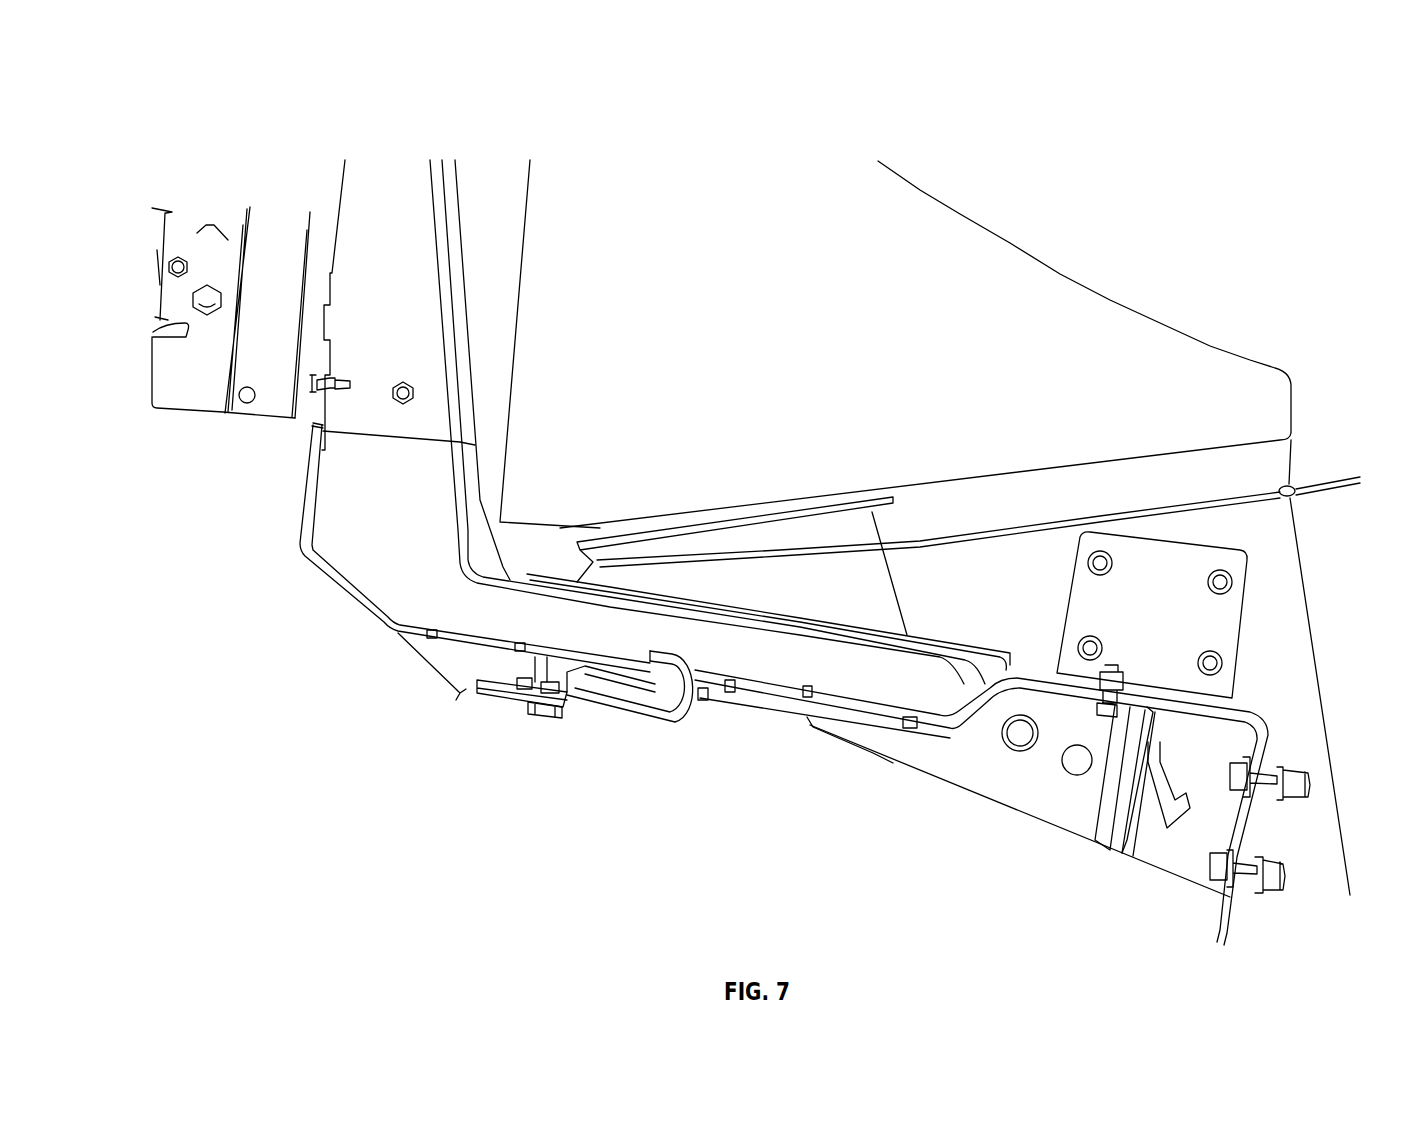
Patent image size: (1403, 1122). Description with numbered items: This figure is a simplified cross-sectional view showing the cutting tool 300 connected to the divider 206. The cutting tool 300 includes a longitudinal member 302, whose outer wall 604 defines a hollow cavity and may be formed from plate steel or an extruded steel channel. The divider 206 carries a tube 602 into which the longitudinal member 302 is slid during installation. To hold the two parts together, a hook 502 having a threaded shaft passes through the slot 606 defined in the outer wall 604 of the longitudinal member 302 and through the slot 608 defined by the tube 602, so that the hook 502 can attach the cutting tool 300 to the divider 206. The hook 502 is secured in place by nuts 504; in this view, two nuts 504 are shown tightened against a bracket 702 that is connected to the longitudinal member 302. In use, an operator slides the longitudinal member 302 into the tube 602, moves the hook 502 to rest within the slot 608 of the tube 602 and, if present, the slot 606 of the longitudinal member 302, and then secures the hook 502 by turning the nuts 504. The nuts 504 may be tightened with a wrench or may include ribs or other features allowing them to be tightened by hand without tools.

The cutting tool 300 is at (887, 145).
The divider 206 is at (1262, 435).
The longitudinal member 302 is at (480, 622).
The hook 502 is at (633, 720).
The nuts 504 is at (517, 707).
The tube 602 is at (638, 593).
The outer wall 604 is at (890, 703).
The slot 606 is at (730, 680).
The slot 608 is at (777, 703).
The bracket 702 is at (537, 720).